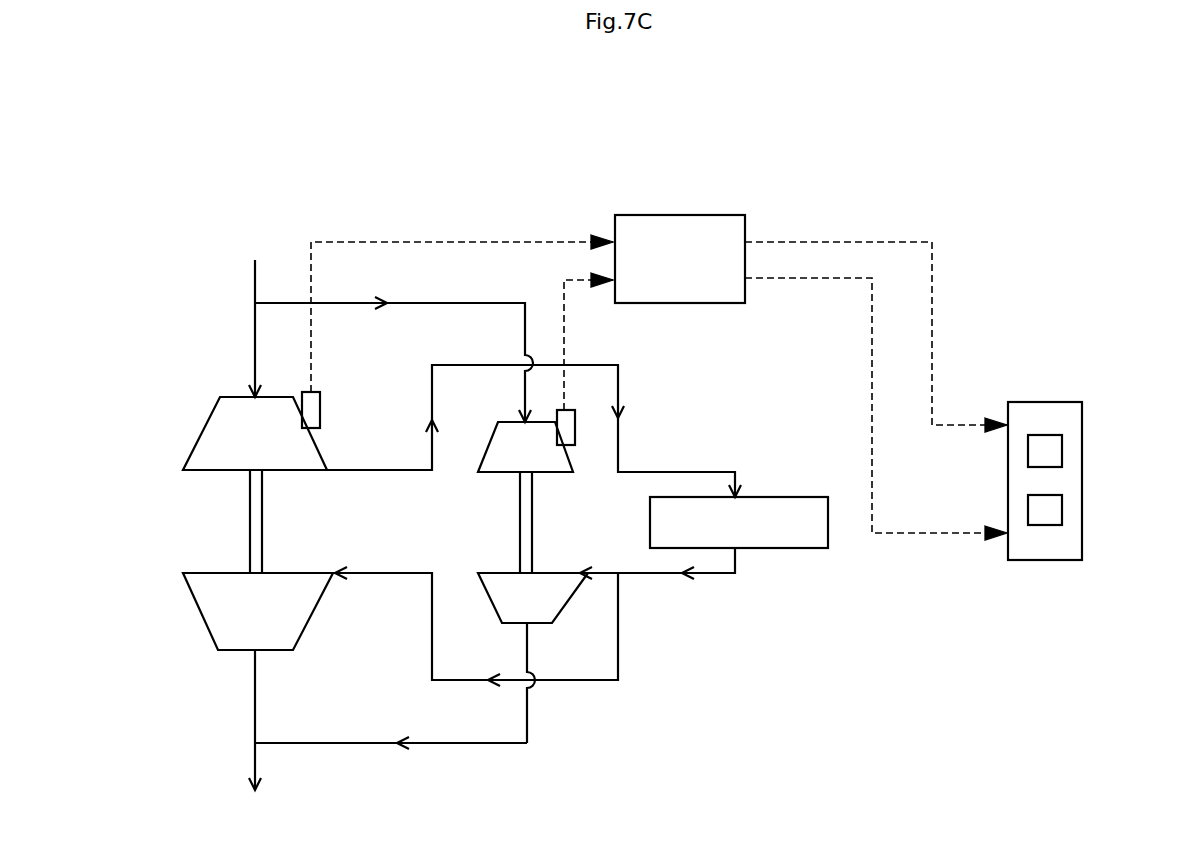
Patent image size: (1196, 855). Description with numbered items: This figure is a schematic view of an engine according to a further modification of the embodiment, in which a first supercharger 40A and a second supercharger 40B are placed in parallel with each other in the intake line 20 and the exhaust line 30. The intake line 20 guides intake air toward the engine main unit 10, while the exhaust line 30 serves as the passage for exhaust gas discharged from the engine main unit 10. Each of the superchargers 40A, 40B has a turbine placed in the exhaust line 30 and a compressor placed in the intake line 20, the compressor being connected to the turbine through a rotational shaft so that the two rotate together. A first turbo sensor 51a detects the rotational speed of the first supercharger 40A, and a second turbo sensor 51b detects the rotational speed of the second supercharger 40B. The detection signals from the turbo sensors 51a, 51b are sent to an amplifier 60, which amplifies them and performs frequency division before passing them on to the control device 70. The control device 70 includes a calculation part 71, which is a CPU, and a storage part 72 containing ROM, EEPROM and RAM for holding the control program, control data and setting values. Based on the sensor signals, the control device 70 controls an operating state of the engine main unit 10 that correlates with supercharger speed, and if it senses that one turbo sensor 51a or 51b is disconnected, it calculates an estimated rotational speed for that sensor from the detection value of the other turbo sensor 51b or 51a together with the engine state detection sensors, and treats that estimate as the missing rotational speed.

The engine main unit 10 is at (793, 548).
The intake line 20 is at (235, 305).
The exhaust line 30 is at (237, 745).
The first supercharger 40A is at (525, 545).
The second supercharger 40B is at (195, 533).
The first turbo sensor 51a is at (583, 410).
The second turbo sensor 51b is at (321, 408).
The amplifier 60 is at (702, 281).
The control device 70 is at (1089, 434).
The calculation part 71 is at (1062, 452).
The storage part 72 is at (1062, 510).